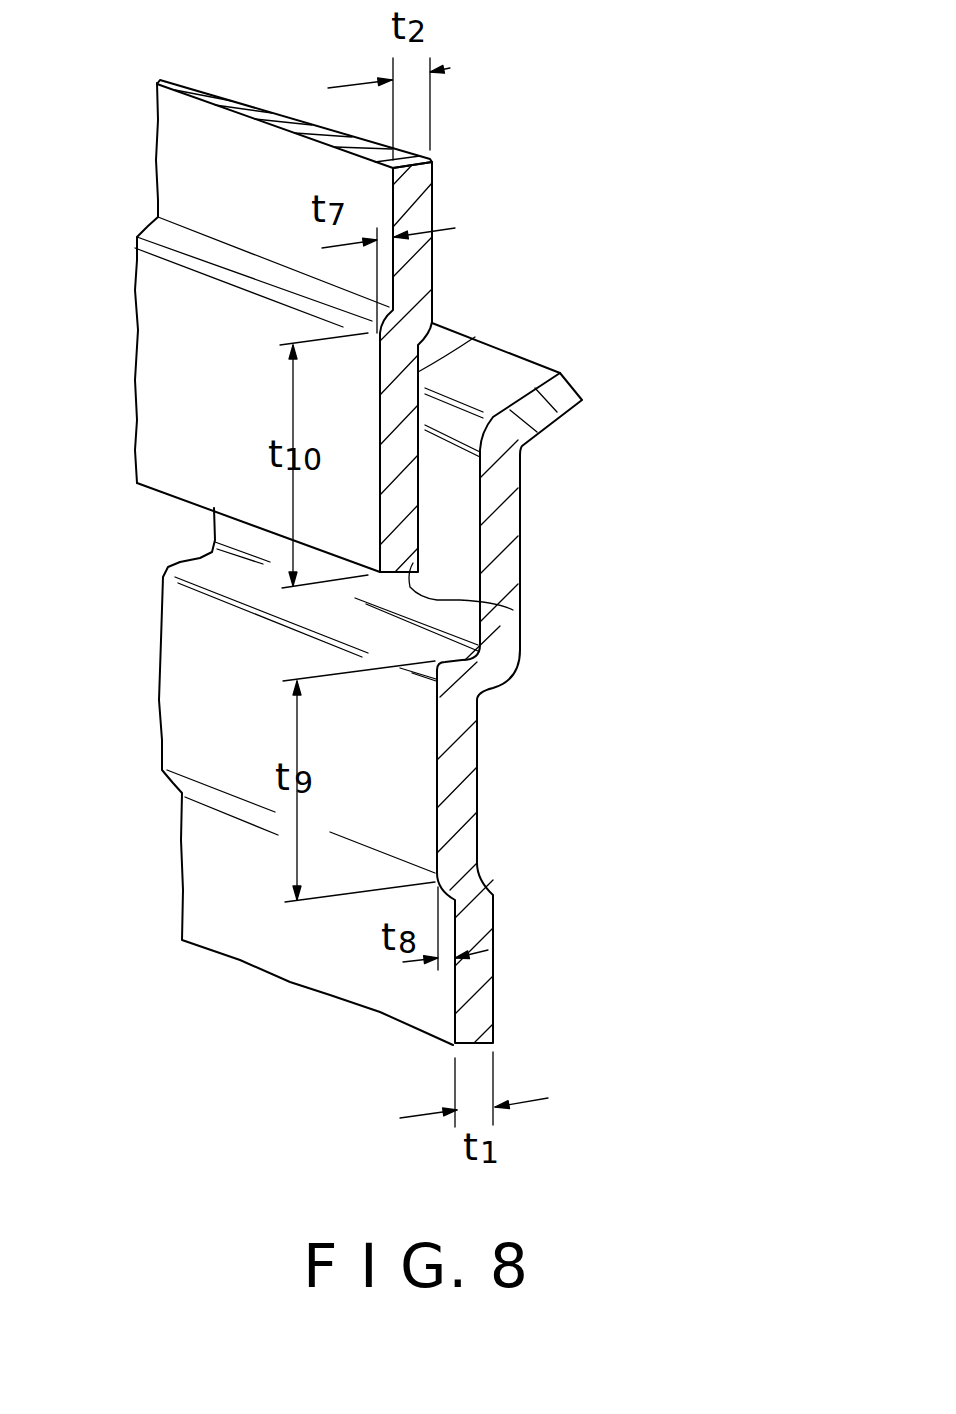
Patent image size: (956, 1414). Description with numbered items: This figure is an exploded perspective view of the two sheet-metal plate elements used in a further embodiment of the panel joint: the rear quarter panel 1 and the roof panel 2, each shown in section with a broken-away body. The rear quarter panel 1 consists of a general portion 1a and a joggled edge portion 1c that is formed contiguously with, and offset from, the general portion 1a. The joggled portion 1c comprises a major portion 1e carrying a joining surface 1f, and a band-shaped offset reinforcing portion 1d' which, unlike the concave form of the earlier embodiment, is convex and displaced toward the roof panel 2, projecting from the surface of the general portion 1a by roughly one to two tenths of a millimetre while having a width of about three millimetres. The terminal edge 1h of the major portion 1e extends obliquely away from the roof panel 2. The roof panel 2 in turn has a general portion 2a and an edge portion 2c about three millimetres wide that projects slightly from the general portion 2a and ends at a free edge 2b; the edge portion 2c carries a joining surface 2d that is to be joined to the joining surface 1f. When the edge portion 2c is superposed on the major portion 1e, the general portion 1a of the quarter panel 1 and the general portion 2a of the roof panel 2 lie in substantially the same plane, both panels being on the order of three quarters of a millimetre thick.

The rear quarter panel 1 is at (522, 812).
The general portion 1a is at (477, 1005).
The joggled portion 1c is at (680, 373).
The band-shaped offset reinforcing portion 1d' is at (526, 805).
The major portion 1e is at (506, 519).
The joining surface 1f is at (445, 470).
The terminal edge 1h is at (563, 398).
The roof panel 2 is at (170, 356).
The general portion 2a is at (420, 182).
The free edge 2b is at (513, 610).
The edge portion 2c is at (168, 445).
The joining surface 2d is at (475, 337).